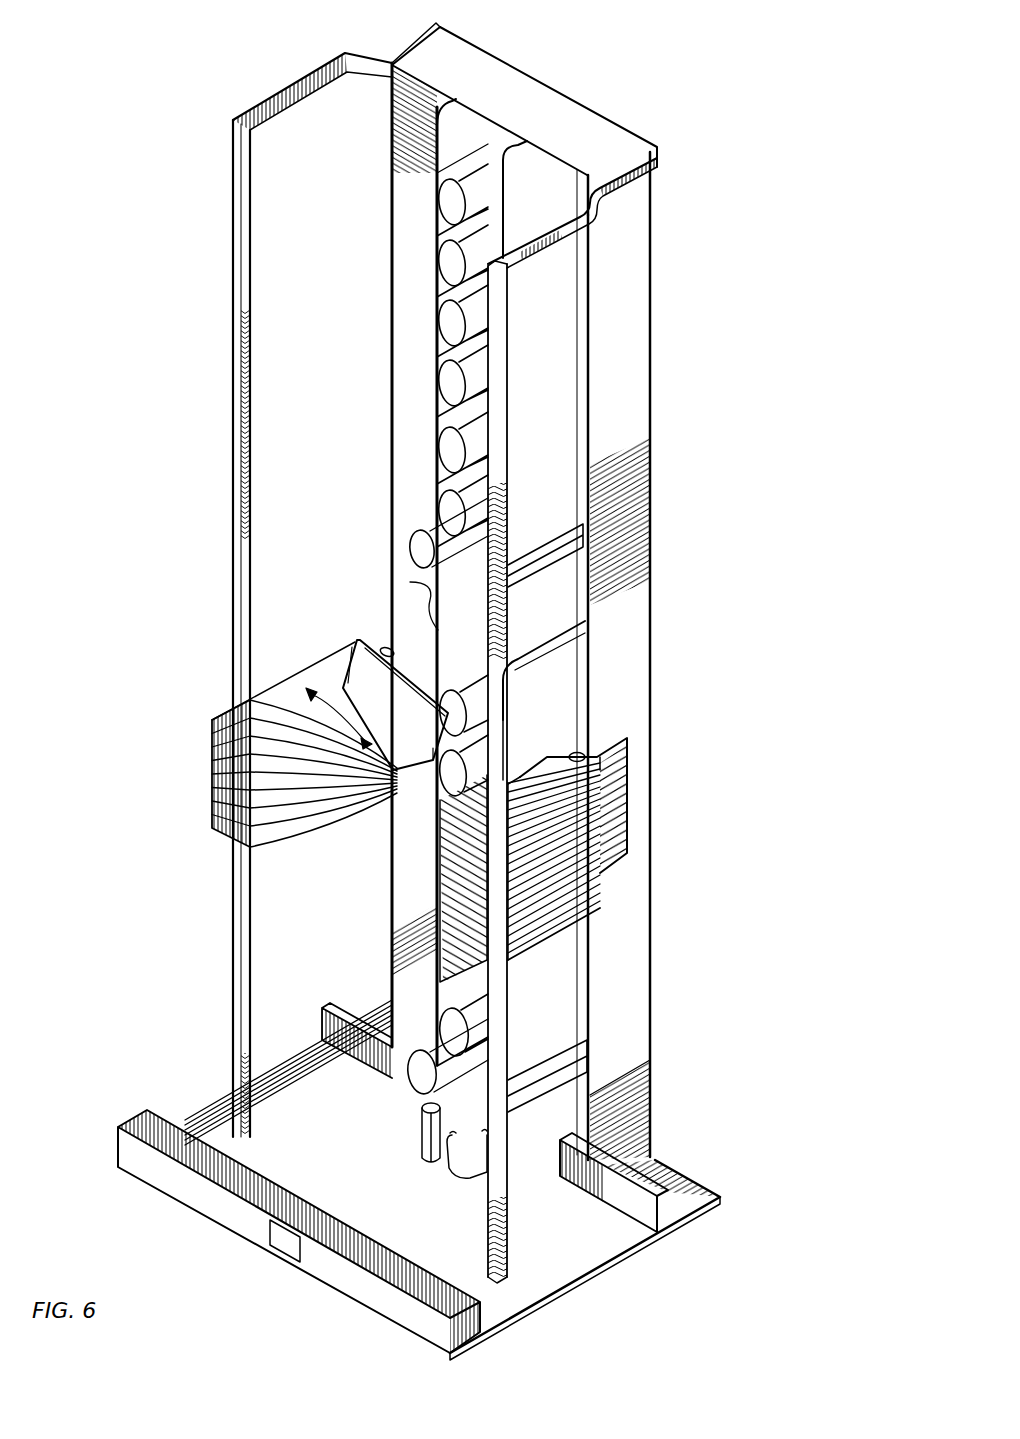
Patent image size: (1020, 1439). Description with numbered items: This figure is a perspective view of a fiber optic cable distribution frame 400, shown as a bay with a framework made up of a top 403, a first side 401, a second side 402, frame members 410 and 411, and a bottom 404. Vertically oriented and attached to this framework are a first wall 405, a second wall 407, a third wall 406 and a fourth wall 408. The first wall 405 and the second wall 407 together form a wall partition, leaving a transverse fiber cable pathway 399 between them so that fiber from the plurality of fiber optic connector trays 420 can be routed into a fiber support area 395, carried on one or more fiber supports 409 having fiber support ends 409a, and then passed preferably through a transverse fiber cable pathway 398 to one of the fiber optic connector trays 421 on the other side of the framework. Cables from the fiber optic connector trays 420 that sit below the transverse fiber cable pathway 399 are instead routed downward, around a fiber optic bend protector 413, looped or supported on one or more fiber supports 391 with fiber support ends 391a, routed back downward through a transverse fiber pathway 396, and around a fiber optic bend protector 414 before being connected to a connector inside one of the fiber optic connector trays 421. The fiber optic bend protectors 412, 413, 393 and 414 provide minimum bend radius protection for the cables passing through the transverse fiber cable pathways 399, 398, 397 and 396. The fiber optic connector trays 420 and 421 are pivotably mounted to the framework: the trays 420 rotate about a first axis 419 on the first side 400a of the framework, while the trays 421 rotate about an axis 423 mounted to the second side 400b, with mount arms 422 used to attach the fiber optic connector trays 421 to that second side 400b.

The fiber optic cable distribution frame 400 is at (558, 68).
The first side of framework 400a is at (554, 75).
The second side of framework 400b is at (653, 139).
The first side 401 is at (390, 237).
The second side 402 is at (620, 350).
The top 403 is at (602, 155).
The bottom 404 is at (418, 1207).
The first wall 405 is at (490, 155).
The third wall 406 is at (562, 208).
The second wall 407 is at (457, 1003).
The fourth wall 408 is at (567, 709).
The fiber supports 409 is at (473, 441).
The fiber support ends 409a is at (412, 371).
The frame member 410 is at (233, 448).
The frame member 411 is at (490, 344).
The fiber optic bend protector 412 is at (410, 542).
The fiber optic bend protector 413 is at (541, 563).
The fiber optic bend protector 414 is at (543, 1073).
The first axis 419 is at (386, 647).
The fiber optic connector trays 420 is at (428, 710).
The fiber optic connector trays 421 is at (560, 880).
The mount arms 422 is at (608, 815).
The axis 423 is at (578, 748).
The fiber supports 391 is at (480, 770).
The fiber support ends 391a is at (433, 762).
The fiber optic bend protector 393 is at (401, 1080).
The fiber support area 395 is at (532, 130).
The transverse fiber pathway 396 is at (525, 1112).
The transverse fiber cable pathway 397 is at (410, 1152).
The transverse fiber cable pathway 398 is at (548, 613).
The transverse fiber cable pathway 399 is at (412, 590).